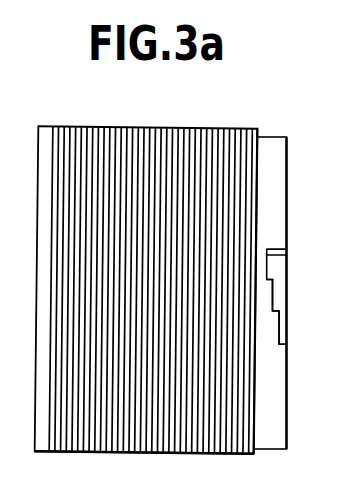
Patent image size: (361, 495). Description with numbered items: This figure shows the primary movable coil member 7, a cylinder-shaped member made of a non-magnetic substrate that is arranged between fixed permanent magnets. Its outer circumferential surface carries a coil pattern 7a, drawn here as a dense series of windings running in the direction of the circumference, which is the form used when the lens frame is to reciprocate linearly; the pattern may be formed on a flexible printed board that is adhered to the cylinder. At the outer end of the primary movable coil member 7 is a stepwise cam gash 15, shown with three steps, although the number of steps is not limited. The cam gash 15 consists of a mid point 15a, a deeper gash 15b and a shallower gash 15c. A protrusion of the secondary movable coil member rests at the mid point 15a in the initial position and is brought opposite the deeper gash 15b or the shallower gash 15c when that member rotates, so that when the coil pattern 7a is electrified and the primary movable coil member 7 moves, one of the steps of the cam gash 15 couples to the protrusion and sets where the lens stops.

The primary movable coil member 7 is at (272, 179).
The coil pattern 7a is at (182, 128).
The stepwise cam gash 15 is at (274, 270).
The mid point of the cam gash 15a is at (273, 298).
The deeper gash 15b is at (286, 254).
The shallower gash 15c is at (279, 328).